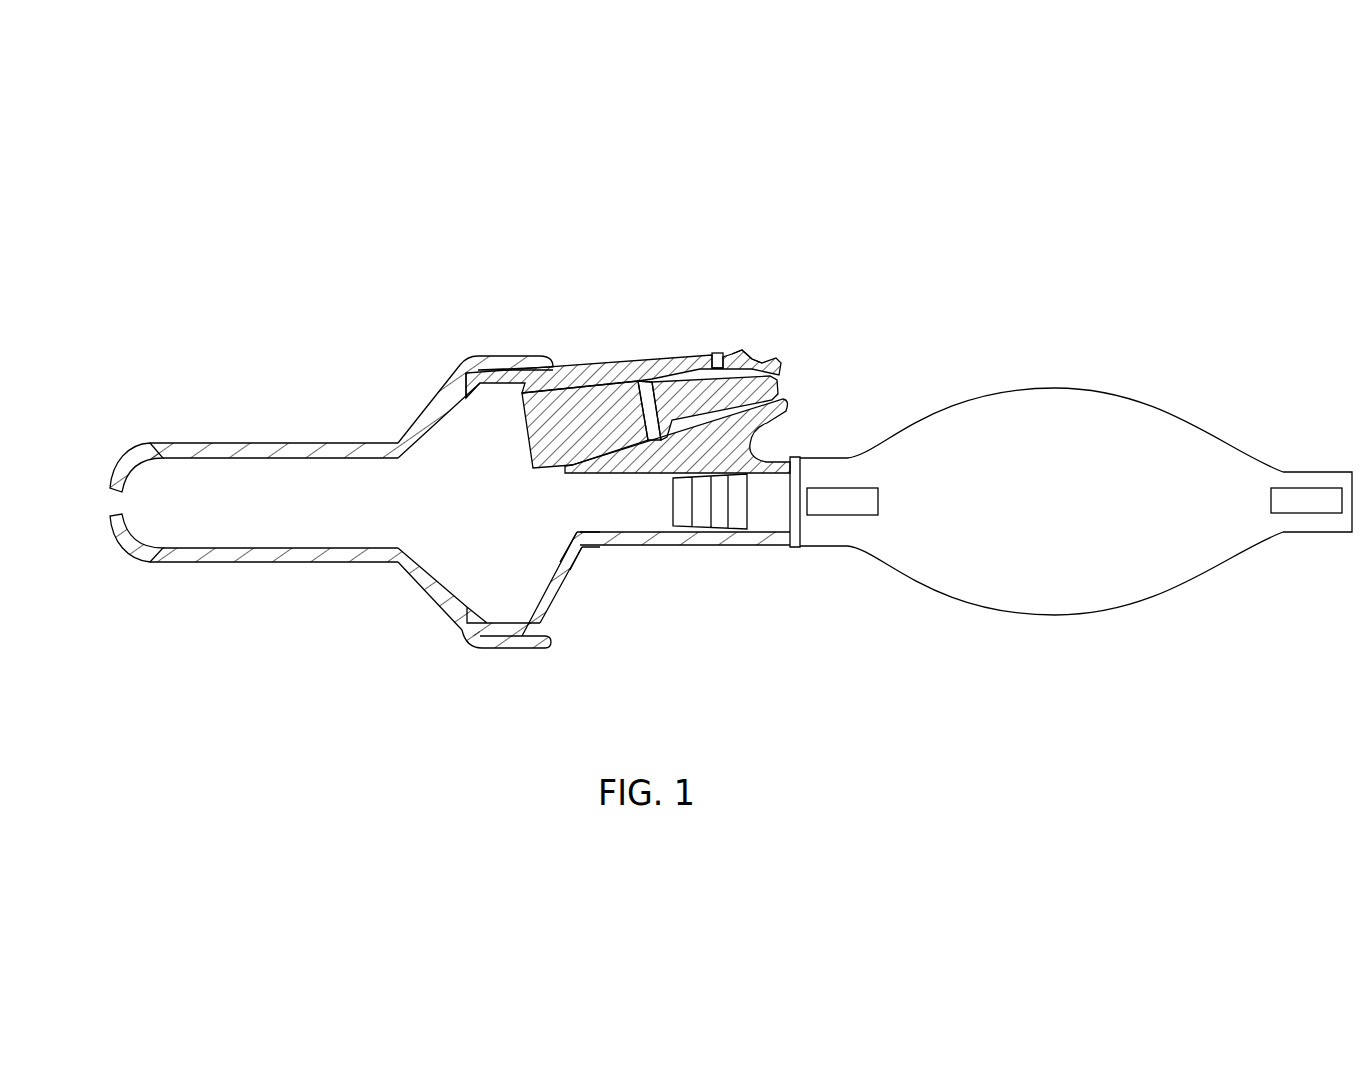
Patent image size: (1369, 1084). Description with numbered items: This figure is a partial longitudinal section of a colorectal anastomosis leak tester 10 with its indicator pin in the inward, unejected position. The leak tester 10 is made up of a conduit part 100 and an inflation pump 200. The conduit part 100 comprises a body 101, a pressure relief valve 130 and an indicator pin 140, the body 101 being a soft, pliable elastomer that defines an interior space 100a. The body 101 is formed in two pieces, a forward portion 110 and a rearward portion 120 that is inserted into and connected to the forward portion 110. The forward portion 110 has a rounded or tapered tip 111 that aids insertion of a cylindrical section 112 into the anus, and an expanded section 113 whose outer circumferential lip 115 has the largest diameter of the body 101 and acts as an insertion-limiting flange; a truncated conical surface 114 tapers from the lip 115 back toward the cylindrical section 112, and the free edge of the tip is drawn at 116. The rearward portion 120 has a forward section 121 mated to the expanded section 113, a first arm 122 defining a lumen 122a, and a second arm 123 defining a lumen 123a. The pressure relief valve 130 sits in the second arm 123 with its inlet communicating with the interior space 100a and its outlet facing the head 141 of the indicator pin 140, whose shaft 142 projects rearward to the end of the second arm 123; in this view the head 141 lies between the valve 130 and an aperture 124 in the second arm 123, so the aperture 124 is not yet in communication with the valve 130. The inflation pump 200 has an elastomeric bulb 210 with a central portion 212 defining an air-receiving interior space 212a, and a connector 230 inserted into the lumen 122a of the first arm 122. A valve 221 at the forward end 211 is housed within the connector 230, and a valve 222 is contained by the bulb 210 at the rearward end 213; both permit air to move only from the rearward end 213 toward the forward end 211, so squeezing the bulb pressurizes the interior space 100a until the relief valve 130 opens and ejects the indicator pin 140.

The colorectal anastomosis leak tester 10 is at (697, 233).
The conduit part 100 is at (362, 296).
The interior space 100a is at (495, 516).
The body 101 is at (496, 625).
The forward portion 110 is at (322, 564).
The tip 111 is at (127, 556).
The cylindrical section 112 is at (266, 441).
The expanded section 113 is at (452, 371).
The truncated conical surface 114 is at (420, 599).
The outer circumferential lip 115 is at (526, 651).
The upper lip 116 is at (105, 501).
The rearward portion 120 is at (587, 550).
The forward section 121 is at (557, 613).
The first arm 122 is at (677, 548).
The lumen 122a is at (648, 516).
The second arm 123 is at (602, 365).
The lumen 123a is at (640, 380).
The aperture 124 is at (718, 354).
The pressure relief valve 130 is at (568, 414).
The indicator pin 140 is at (782, 372).
The head 141 is at (659, 380).
The shaft 142 is at (753, 368).
The inflation pump 200 is at (1007, 308).
The elastomeric bulb 210 is at (1076, 535).
The forward end 211 is at (838, 455).
The central portion 212 is at (1081, 566).
The interior space 212a is at (1082, 516).
The rearward end 213 is at (1307, 470).
The valve 221 is at (851, 511).
The valve 222 is at (1294, 508).
The connector 230 is at (727, 506).